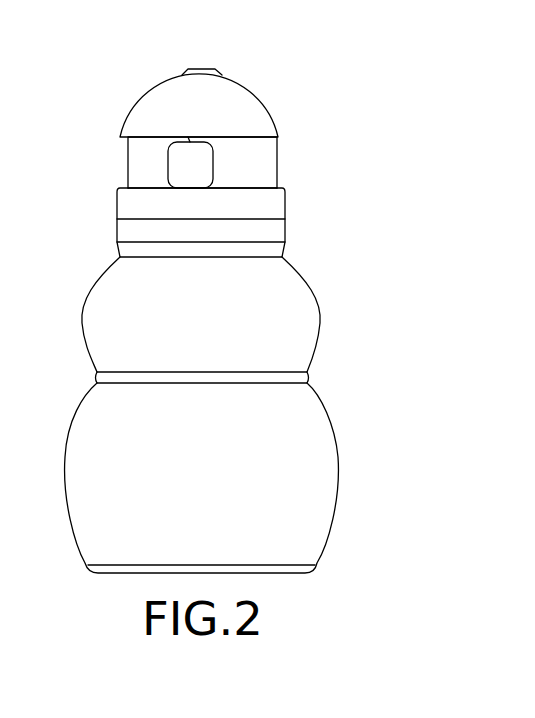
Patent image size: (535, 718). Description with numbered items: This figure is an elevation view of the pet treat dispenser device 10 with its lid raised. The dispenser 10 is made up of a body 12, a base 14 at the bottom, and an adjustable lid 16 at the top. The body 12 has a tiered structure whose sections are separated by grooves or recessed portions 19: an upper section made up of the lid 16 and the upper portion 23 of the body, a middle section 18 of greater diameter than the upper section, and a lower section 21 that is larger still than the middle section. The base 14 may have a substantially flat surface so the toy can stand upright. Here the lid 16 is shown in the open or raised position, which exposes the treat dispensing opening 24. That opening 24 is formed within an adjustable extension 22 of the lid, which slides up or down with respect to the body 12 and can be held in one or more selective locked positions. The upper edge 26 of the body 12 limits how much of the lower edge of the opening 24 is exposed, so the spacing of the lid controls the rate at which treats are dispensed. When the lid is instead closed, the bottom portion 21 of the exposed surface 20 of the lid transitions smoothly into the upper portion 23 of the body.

The dispenser device 10 is at (447, 164).
The body 12 is at (388, 480).
The base 14 is at (298, 573).
The adjustable lid 16 is at (298, 68).
The middle section 18 is at (319, 335).
The recessed portions 19 is at (118, 256).
The exposed surface 20 is at (244, 83).
The bottom portion 21 is at (272, 115).
The adjustable extension 22 is at (265, 162).
The upper portion 23 is at (117, 200).
The treat dispensing opening 24 is at (168, 165).
The upper edge 26 is at (258, 188).